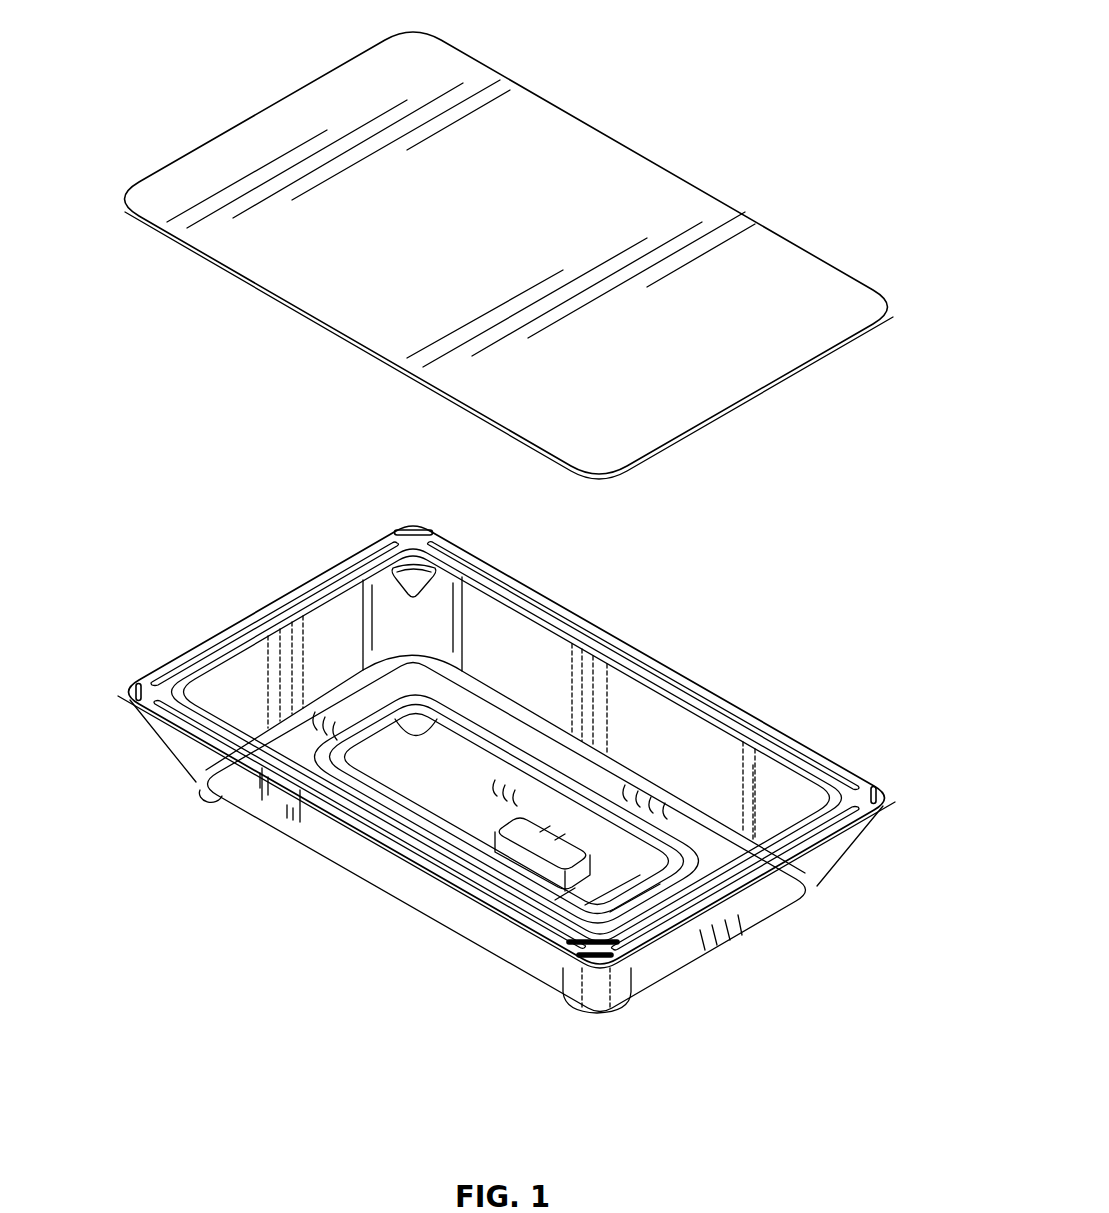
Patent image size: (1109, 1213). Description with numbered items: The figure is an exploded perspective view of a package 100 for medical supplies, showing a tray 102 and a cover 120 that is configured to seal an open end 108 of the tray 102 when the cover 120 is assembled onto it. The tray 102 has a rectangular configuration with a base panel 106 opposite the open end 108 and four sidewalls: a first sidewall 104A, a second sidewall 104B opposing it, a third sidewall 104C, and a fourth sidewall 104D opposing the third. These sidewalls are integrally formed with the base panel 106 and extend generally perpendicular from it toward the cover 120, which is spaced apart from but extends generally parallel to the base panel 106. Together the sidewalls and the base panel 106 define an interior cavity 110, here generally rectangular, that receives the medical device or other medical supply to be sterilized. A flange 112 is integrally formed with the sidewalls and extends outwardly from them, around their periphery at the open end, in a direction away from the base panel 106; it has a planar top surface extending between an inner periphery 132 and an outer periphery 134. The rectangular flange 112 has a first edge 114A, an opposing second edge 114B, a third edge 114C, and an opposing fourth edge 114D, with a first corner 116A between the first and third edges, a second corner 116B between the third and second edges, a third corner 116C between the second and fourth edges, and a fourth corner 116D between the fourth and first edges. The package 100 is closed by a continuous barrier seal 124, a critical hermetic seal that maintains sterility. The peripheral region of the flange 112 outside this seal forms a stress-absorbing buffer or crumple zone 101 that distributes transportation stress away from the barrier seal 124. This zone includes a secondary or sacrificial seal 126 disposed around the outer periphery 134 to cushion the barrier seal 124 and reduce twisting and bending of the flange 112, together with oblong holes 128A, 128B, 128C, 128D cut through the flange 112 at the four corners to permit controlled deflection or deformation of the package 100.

The package 100 is at (767, 140).
The stress-absorbing buffer or crumple zone 101 is at (717, 690).
The tray 102 is at (350, 855).
The first sidewall 104A is at (448, 905).
The second sidewall 104B is at (737, 765).
The third sidewall 104C is at (692, 945).
The fourth sidewall 104D is at (255, 658).
The base panel 106 is at (455, 807).
The open end 108 is at (752, 820).
The interior cavity 110 is at (505, 660).
The flange 112 is at (153, 713).
The first edge 114A is at (310, 805).
The second edge 114B is at (747, 712).
The third edge 114C is at (770, 885).
The fourth edge 114D is at (205, 655).
The first corner 116A is at (600, 978).
The second corner 116B is at (885, 805).
The third corner 116C is at (403, 524).
The fourth corner 116D is at (126, 693).
The cover 120 is at (505, 230).
The continuous barrier seal 124 is at (590, 640).
The secondary or sacrificial seal 126 is at (665, 660).
The hole 128A is at (592, 965).
The hole 128B is at (877, 792).
The hole 128C is at (432, 532).
The hole 128D is at (135, 700).
The inner periphery 132 is at (342, 598).
The outer periphery 134 is at (300, 568).